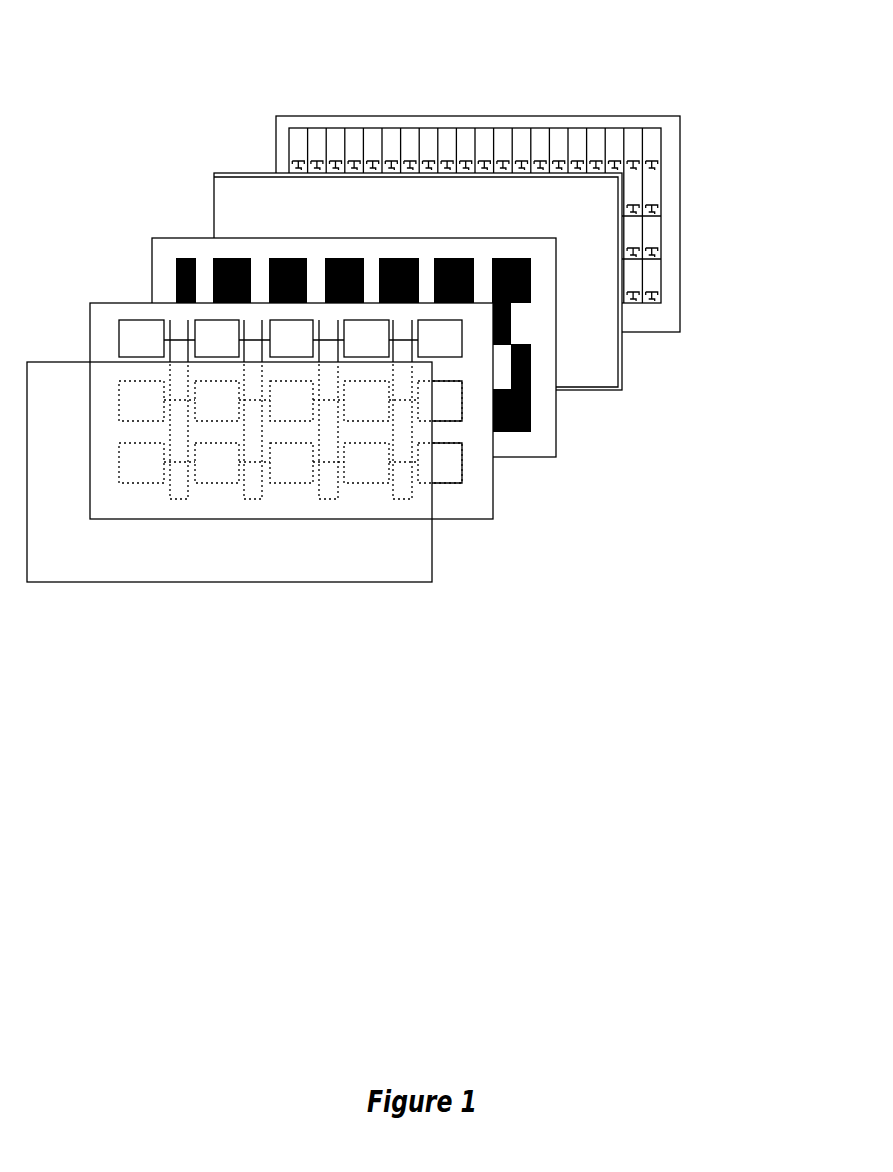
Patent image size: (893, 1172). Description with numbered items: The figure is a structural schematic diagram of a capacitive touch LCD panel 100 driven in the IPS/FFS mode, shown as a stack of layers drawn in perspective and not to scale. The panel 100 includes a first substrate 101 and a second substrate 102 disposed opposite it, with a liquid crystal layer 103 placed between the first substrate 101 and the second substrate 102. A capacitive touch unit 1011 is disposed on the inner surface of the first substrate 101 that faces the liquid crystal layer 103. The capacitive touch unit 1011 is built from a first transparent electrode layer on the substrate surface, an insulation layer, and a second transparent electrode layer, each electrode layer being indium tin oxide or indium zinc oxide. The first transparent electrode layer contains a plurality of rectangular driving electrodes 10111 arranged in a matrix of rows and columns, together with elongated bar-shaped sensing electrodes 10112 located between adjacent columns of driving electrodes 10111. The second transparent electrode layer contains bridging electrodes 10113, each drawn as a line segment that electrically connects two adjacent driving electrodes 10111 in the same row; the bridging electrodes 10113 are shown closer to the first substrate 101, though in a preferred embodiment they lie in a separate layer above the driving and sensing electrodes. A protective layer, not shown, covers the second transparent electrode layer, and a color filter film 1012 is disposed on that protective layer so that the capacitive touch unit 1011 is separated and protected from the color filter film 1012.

The capacitive touch LCD panel 100 is at (402, 298).
The first substrate 101 is at (432, 555).
The capacitive touch unit 1011 is at (327, 347).
The color filter film 1012 is at (556, 443).
The driving electrodes 10111 is at (135, 343).
The sensing electrodes 10112 is at (183, 332).
The bridging electrodes 10113 is at (242, 335).
The second substrate 102 is at (680, 313).
The liquid crystal layer 103 is at (622, 363).